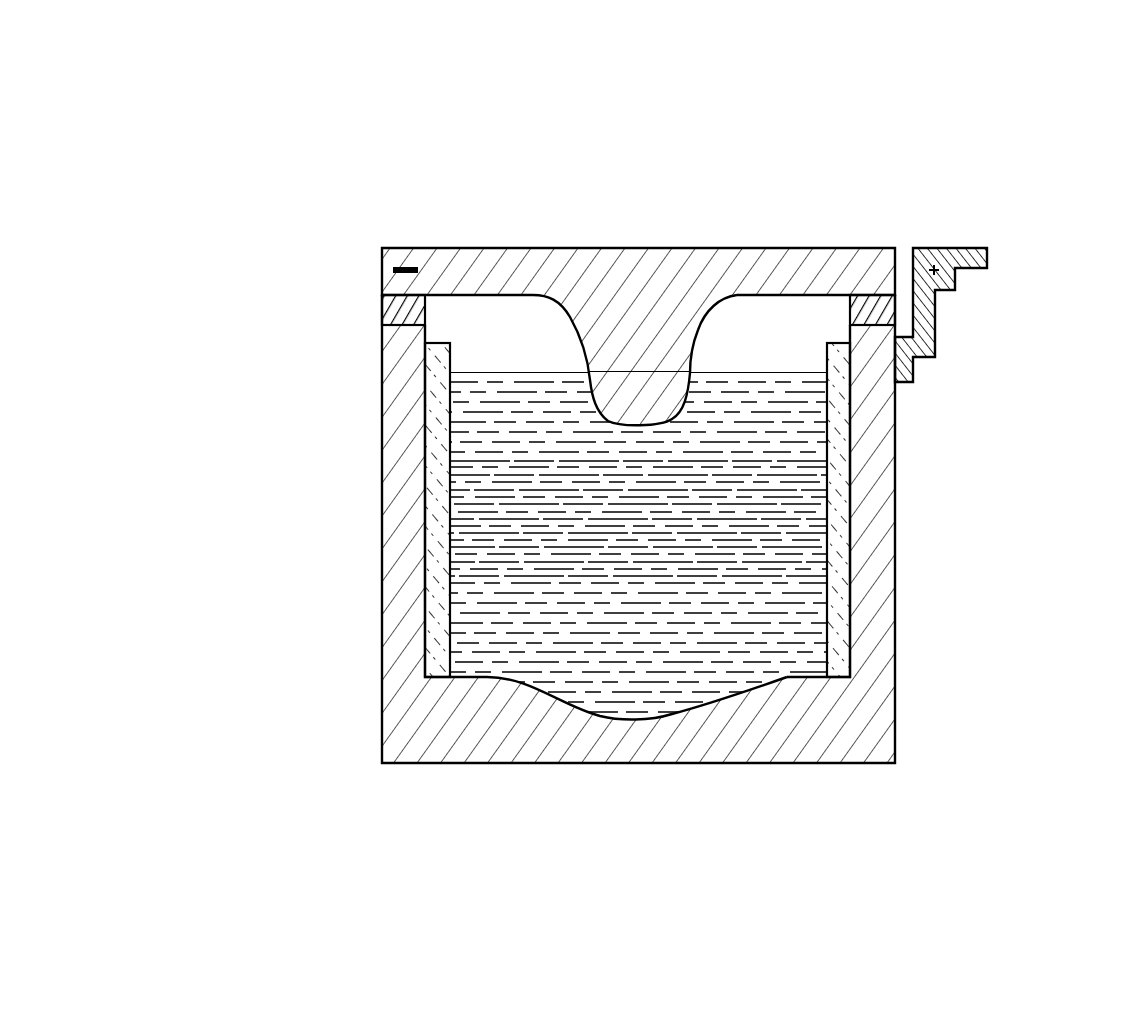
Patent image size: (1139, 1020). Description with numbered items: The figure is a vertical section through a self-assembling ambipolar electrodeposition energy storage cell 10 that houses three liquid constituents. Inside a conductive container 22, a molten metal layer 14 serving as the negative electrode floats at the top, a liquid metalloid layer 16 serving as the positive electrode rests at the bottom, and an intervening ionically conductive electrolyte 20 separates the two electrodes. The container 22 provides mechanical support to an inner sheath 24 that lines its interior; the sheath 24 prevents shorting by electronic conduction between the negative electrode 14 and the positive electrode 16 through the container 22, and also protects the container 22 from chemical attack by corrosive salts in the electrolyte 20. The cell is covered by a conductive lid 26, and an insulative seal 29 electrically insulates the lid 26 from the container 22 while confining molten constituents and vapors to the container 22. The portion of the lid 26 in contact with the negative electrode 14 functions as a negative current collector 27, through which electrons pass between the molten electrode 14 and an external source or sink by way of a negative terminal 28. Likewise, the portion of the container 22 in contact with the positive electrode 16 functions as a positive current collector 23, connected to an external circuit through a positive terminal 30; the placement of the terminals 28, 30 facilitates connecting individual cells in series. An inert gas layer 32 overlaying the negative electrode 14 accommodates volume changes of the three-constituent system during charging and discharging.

The energy storage cell 10 is at (306, 123).
The molten metal layer 14 is at (470, 412).
The liquid metalloid layer 16 is at (478, 618).
The ionically conductive electrolyte 20 is at (470, 510).
The conductive container 22 is at (862, 722).
The positive current collector 23 is at (640, 722).
The inner sheath 24 is at (845, 600).
The conductive lid 26 is at (622, 258).
The negative current collector 27 is at (640, 387).
The negative terminal 28 is at (382, 258).
The insulative seal 29 is at (383, 302).
The positive terminal 30 is at (947, 248).
The inert gas layer 32 is at (778, 318).